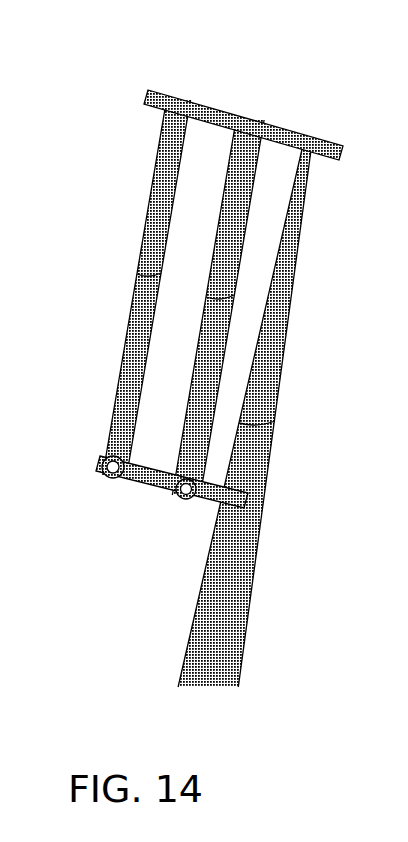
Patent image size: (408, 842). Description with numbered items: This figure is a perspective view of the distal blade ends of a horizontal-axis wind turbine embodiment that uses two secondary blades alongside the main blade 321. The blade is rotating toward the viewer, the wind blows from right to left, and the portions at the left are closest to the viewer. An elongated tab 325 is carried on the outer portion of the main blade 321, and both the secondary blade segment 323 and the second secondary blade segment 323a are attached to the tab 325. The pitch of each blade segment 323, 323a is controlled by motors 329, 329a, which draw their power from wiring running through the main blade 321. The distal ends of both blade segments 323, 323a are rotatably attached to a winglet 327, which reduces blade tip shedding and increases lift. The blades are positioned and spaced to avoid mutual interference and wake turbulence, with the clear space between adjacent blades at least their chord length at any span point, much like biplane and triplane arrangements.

The main blade 321 is at (249, 572).
The secondary blade segment 323 is at (193, 360).
The second secondary blade segment 323a is at (167, 172).
The elongated tab 325 is at (157, 486).
The winglet 327 is at (277, 120).
The motor 329 is at (188, 500).
The motor 329a is at (110, 479).